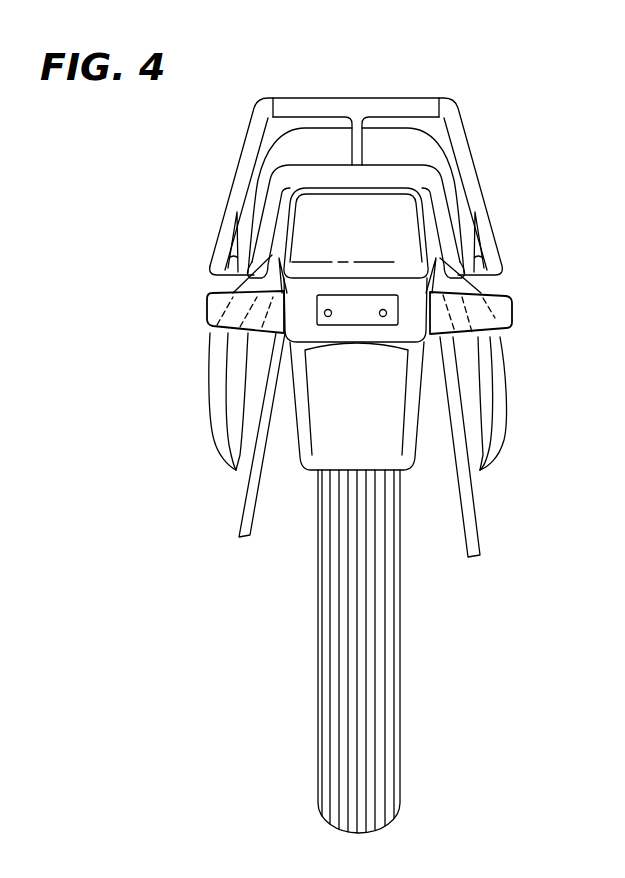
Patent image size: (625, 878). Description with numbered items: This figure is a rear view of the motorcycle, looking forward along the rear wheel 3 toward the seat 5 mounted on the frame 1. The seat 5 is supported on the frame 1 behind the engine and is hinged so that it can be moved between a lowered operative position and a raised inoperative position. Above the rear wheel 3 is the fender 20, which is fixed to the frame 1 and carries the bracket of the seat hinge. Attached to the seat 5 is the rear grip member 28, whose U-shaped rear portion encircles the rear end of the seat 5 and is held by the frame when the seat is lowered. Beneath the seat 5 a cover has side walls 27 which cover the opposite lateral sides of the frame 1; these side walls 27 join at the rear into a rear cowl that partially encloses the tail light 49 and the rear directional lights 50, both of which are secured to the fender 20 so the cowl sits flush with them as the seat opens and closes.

The frame 1 is at (243, 508).
The rear wheel 3 is at (337, 703).
The seat 5 is at (395, 142).
The fender 20 is at (325, 447).
The side walls 27 is at (210, 393).
The rear grip member 28 is at (468, 156).
The tail light 49 is at (405, 233).
The rear directional lights 50 is at (208, 309).